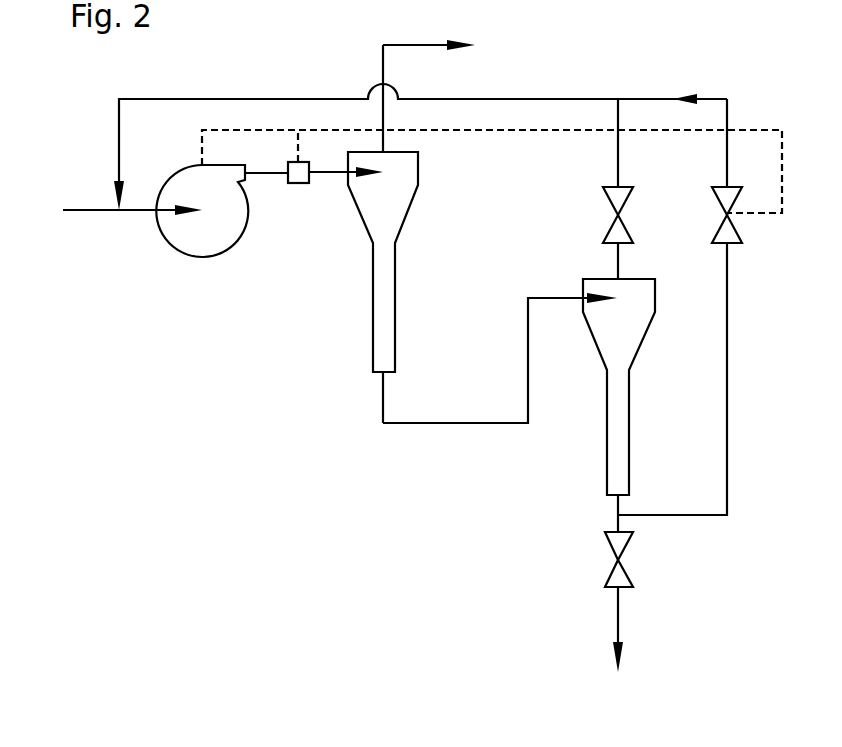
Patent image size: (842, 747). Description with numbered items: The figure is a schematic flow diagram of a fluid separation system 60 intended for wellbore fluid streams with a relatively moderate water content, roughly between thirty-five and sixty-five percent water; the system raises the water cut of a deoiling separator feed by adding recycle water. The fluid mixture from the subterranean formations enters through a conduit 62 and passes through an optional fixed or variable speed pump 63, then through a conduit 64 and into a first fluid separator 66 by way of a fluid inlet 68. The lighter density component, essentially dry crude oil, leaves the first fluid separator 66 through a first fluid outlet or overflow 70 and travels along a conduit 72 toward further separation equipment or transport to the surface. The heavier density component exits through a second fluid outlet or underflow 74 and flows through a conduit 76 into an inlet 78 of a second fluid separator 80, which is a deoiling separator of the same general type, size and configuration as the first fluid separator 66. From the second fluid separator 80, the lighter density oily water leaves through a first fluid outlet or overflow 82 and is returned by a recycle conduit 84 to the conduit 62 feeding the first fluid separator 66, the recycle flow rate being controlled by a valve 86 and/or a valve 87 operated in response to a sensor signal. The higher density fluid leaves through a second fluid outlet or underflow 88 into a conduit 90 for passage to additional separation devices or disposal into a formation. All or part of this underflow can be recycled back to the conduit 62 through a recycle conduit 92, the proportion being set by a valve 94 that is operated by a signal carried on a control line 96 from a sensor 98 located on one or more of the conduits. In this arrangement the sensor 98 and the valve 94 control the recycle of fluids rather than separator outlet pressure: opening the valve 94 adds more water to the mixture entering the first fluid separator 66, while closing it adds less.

The fluid separation system 60 is at (272, 428).
The conduit 62 is at (90, 209).
The pump 63 is at (213, 257).
The conduit 64 is at (264, 174).
The first fluid separator 66 is at (383, 262).
The fluid inlet 68 is at (386, 173).
The first fluid outlet or overflow 70 is at (385, 150).
The conduit 72 is at (381, 50).
The second fluid outlet or underflow 74 is at (380, 376).
The conduit 76 is at (455, 424).
The inlet 78 is at (600, 292).
The second fluid separator 80 is at (619, 387).
The first fluid outlet or overflow 82 is at (622, 279).
The recycle conduit 84 is at (620, 150).
The valve 86 is at (612, 215).
The valve 87 is at (612, 560).
The second fluid outlet or underflow 88 is at (614, 497).
The conduit 90 is at (615, 620).
The recycle conduit 92 is at (730, 364).
The valve 94 is at (722, 215).
The control line 96 is at (550, 131).
The sensor 98 is at (298, 184).